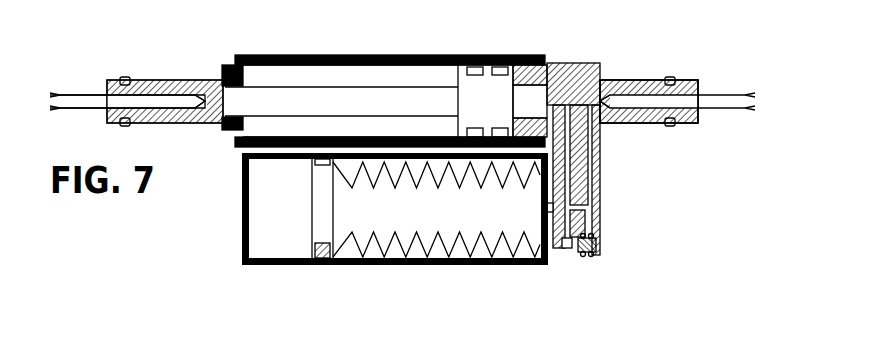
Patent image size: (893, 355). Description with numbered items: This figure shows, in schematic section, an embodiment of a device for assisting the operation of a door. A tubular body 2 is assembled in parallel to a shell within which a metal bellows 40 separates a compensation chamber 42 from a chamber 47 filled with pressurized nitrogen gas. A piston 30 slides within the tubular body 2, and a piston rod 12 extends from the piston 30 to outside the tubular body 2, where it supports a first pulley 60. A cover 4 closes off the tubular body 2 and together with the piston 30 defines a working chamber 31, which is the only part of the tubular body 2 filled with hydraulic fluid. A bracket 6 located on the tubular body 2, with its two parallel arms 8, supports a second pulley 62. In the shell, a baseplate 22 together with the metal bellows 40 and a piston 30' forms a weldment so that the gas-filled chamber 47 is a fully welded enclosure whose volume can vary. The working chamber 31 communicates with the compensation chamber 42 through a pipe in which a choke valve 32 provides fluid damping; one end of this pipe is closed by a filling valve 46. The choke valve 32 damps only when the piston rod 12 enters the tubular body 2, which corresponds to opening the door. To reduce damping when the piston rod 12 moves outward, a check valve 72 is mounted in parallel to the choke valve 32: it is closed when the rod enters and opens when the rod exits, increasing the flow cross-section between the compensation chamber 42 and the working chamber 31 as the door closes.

The tubular body 2 is at (309, 56).
The cover 4 is at (549, 65).
The bracket 6 is at (641, 80).
The arms 8 is at (641, 80).
The piston rod 12 is at (286, 101).
The baseplate 22 is at (549, 259).
The piston 30 is at (485, 72).
The piston 30' is at (255, 208).
The working chamber 31 is at (528, 100).
The choke valve 32 is at (601, 179).
The metal bellows 40 is at (433, 259).
The compensation chamber 42 is at (467, 217).
The filling valve 46 is at (596, 256).
The chamber 47 is at (255, 228).
The first pulley 60 is at (75, 93).
The second pulley 62 is at (728, 94).
The check valve 72 is at (602, 156).